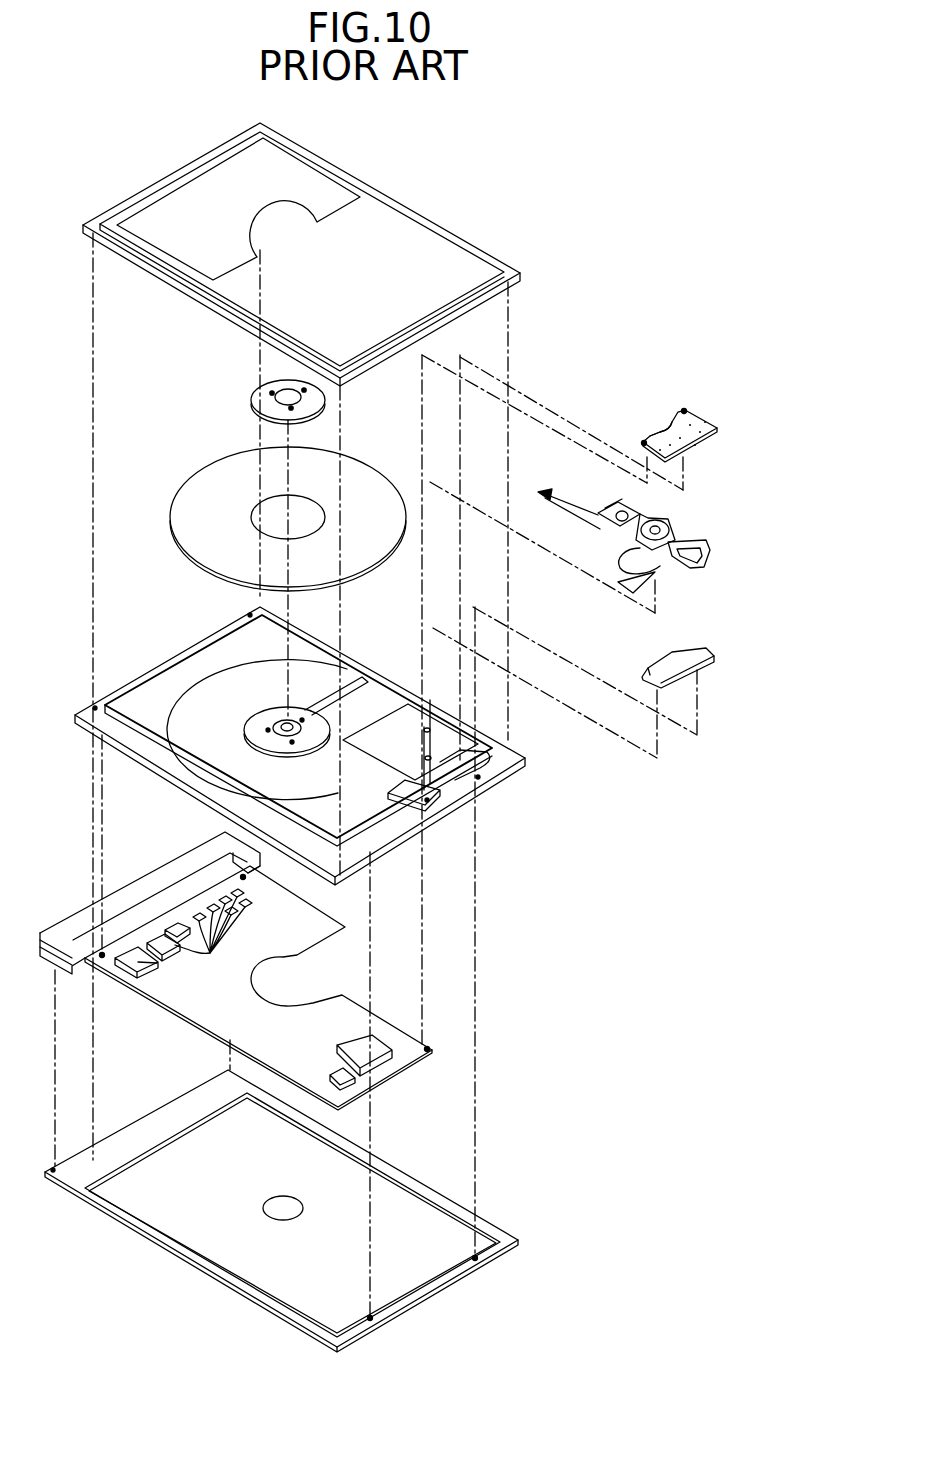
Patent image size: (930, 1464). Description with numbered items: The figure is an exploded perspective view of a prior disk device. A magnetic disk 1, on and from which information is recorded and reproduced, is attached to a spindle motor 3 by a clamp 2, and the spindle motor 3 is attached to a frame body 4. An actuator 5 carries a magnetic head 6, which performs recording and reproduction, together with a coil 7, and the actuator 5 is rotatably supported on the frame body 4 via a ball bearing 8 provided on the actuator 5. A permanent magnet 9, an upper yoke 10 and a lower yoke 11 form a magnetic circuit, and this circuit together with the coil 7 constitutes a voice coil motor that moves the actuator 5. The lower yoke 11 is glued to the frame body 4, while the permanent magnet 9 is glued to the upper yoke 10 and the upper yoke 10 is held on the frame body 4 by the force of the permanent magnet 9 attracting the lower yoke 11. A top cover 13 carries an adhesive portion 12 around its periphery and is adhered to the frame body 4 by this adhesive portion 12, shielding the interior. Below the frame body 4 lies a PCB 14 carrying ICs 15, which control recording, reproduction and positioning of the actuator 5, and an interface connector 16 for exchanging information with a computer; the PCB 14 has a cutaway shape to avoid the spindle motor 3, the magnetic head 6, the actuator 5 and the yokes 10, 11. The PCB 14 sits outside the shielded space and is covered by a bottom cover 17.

The magnetic disk 1 is at (207, 478).
The clamp 2 is at (255, 397).
The spindle motor 3 is at (267, 713).
The frame body 4 is at (502, 775).
The actuator 5 is at (673, 541).
The magnetic head 6 is at (548, 490).
The coil 7 is at (708, 548).
The ball bearing 8 is at (668, 528).
The permanent magnet 9 is at (665, 435).
The upper yoke 10 is at (683, 408).
The lower yoke 11 is at (693, 652).
The adhesive portion 12 is at (520, 277).
The top cover 13 is at (475, 268).
The PCB 14 is at (403, 1048).
The ICs 15 is at (160, 950).
The interface connector 16 is at (137, 893).
The bottom cover 17 is at (425, 1265).